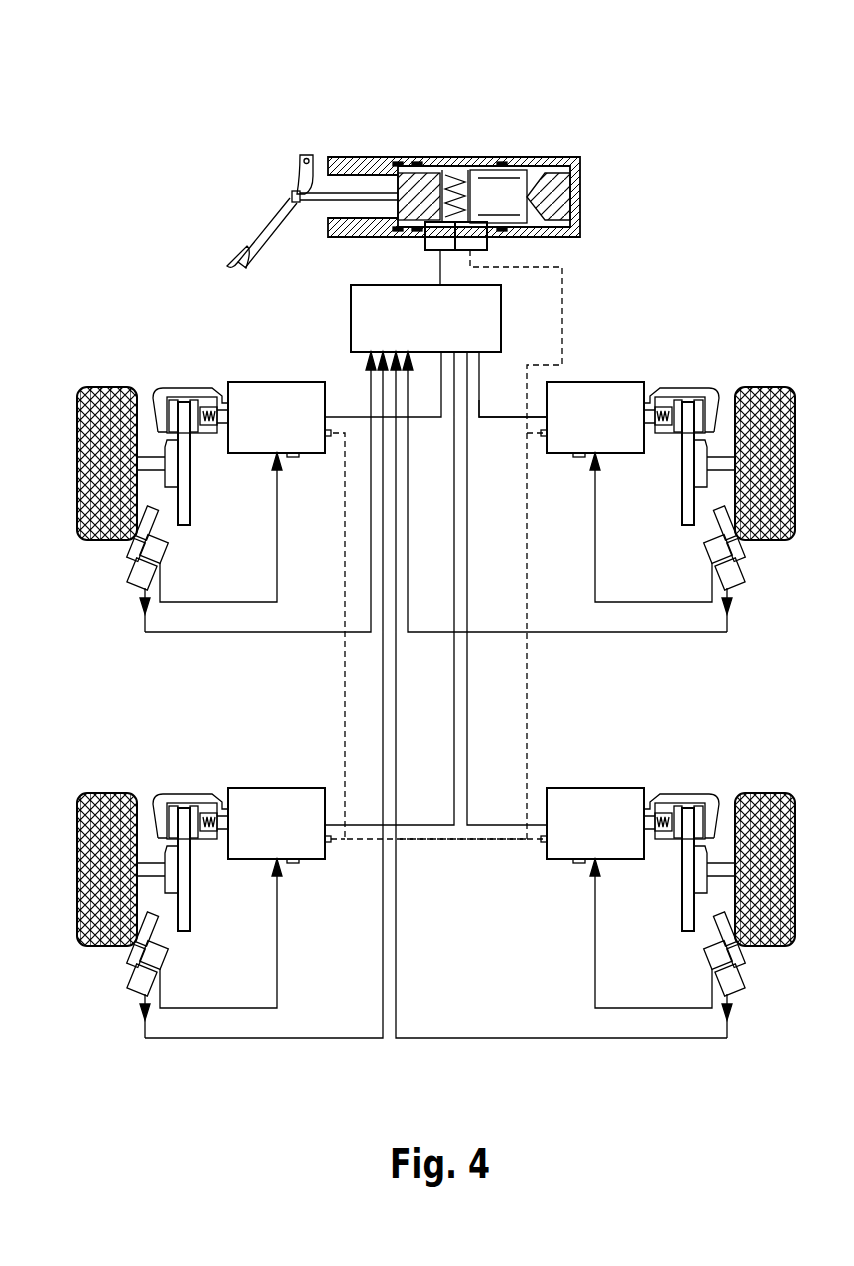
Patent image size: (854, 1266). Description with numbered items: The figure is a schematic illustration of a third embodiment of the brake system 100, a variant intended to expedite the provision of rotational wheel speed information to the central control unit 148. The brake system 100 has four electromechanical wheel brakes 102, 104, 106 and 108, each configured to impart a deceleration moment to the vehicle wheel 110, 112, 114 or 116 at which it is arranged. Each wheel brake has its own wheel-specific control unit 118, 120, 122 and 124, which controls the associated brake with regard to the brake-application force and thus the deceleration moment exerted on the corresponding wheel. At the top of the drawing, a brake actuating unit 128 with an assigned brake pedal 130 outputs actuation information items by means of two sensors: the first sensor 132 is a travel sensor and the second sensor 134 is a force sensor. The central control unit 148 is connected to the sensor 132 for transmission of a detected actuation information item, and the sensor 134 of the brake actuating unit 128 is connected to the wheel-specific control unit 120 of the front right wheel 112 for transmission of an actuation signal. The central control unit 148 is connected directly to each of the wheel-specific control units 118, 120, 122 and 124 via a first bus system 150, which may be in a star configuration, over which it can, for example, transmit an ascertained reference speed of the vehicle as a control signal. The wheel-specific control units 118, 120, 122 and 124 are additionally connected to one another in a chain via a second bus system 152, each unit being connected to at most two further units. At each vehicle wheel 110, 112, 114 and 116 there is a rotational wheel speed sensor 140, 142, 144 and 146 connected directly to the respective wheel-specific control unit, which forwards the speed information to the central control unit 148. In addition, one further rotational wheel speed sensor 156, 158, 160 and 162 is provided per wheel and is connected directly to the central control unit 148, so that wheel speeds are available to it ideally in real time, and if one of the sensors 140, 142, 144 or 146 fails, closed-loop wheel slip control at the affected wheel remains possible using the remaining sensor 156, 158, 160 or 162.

The brake system 100 is at (636, 92).
The wheel brake 102 is at (186, 387).
The wheel brake 104 is at (686, 387).
The wheel brake 106 is at (186, 793).
The wheel brake 108 is at (686, 793).
The vehicle wheel 110 is at (105, 387).
The vehicle wheel 112 is at (768, 387).
The vehicle wheel 114 is at (105, 793).
The vehicle wheel 116 is at (768, 793).
The wheel-specific control unit 118 is at (268, 382).
The wheel-specific control unit 120 is at (600, 382).
The wheel-specific control unit 122 is at (268, 788).
The wheel-specific control unit 124 is at (597, 788).
The brake actuating unit 128 is at (440, 157).
The brake pedal 130 is at (272, 228).
The travel sensor 132 is at (427, 246).
The force sensor 134 is at (488, 245).
The rotational wheel speed sensor 140 is at (166, 548).
The rotational wheel speed sensor 142 is at (706, 548).
The rotational wheel speed sensor 144 is at (166, 954).
The rotational wheel speed sensor 146 is at (706, 954).
The central control unit 148 is at (501, 318).
The first bus system 150 is at (486, 438).
The second bus system 152 is at (465, 862).
The additional rotational wheel speed sensor 156 is at (135, 580).
The additional rotational wheel speed sensor 158 is at (738, 580).
The additional rotational wheel speed sensor 160 is at (135, 986).
The additional rotational wheel speed sensor 162 is at (738, 986).